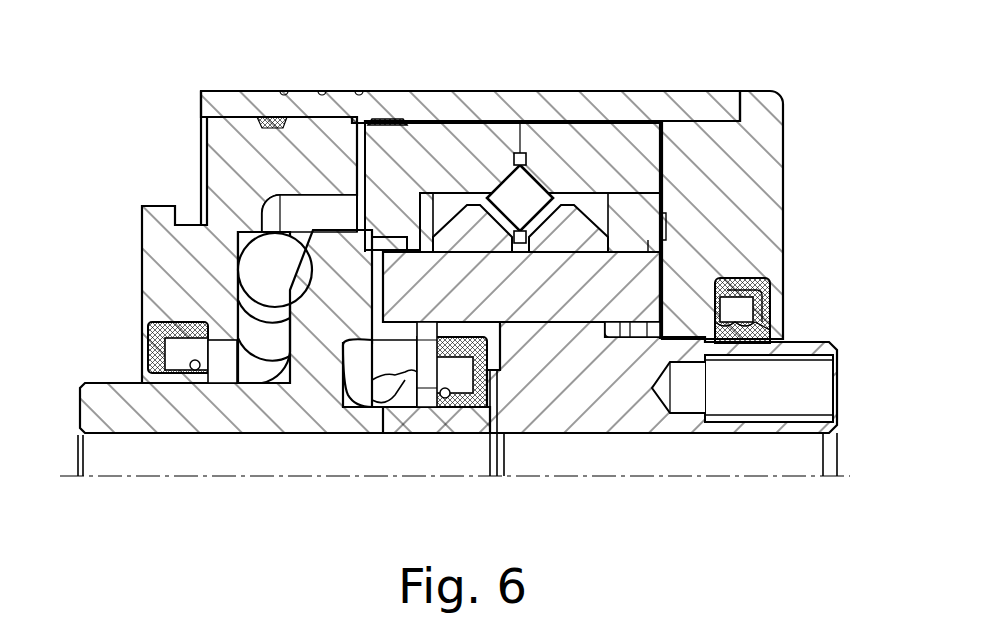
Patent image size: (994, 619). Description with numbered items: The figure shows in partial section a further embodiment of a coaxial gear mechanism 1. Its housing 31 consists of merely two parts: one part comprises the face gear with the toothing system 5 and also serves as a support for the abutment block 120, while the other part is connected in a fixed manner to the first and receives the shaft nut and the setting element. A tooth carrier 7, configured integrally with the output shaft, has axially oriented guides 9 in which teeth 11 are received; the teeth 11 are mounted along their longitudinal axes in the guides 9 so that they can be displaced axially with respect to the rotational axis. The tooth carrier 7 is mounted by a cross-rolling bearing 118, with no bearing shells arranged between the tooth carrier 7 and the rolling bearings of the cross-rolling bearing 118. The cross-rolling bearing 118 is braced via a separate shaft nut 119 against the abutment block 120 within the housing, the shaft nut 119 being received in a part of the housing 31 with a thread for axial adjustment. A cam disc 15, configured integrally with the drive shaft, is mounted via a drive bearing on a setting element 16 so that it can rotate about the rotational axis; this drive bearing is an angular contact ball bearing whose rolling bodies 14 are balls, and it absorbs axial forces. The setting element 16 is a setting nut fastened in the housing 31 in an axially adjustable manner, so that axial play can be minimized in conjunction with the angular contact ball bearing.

The coaxial gear mechanism 1 is at (164, 106).
The toothing system 5 is at (662, 265).
The tooth carrier 7 is at (633, 437).
The guides 9 is at (556, 252).
The teeth 11 is at (623, 245).
The rolling bodies 14 is at (260, 277).
The cam disc 15 is at (288, 437).
The setting element 16 is at (205, 155).
The housing 31 is at (443, 91).
The cross-rolling bearing 118 is at (496, 174).
The shaft nut 119 is at (393, 120).
The abutment block 120 is at (573, 100).